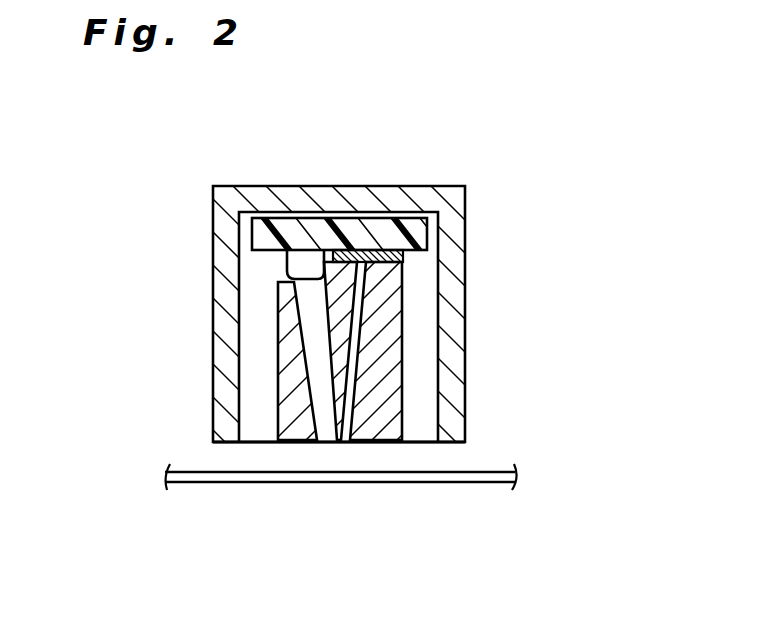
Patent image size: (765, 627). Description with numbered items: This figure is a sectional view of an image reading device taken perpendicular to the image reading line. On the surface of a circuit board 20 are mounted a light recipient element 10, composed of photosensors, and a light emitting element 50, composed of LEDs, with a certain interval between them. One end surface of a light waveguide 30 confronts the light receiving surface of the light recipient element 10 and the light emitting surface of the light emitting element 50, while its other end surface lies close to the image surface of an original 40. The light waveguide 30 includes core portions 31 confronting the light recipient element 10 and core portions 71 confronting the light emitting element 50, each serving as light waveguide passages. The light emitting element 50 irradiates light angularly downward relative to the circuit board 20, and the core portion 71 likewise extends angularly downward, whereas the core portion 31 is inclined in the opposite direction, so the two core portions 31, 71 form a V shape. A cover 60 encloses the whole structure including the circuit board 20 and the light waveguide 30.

The light recipient element 10 is at (370, 262).
The circuit board 20 is at (322, 228).
The light waveguide 30 is at (410, 359).
The core portions 31 is at (345, 428).
The original 40 is at (463, 472).
The light emitting element 50 is at (297, 266).
The cover 60 is at (450, 298).
The core portions 71 is at (317, 354).